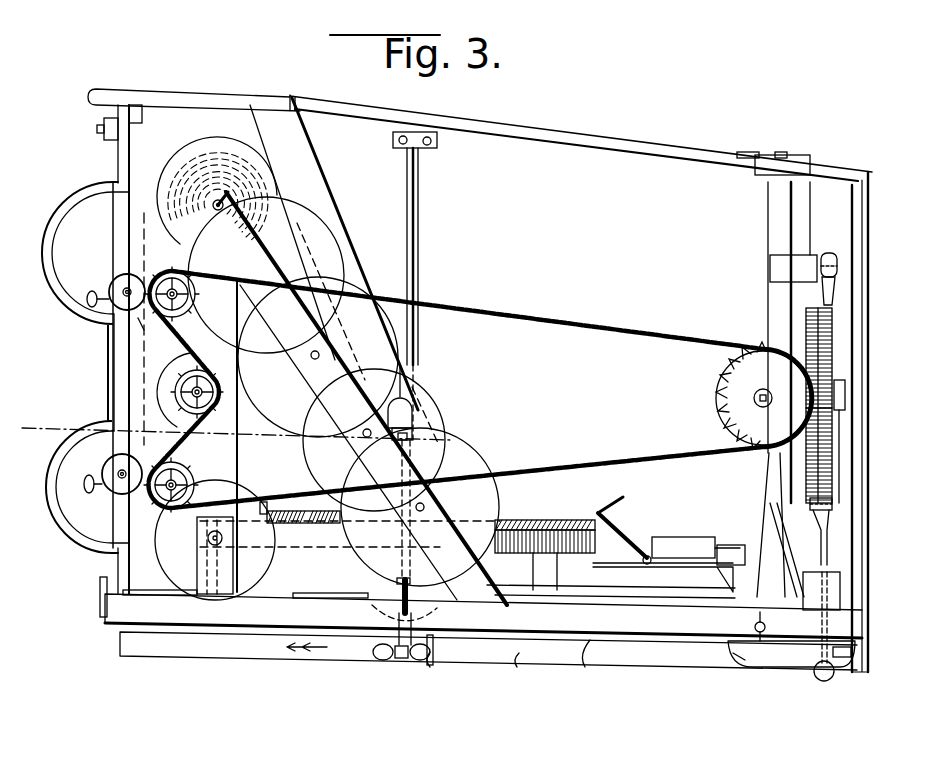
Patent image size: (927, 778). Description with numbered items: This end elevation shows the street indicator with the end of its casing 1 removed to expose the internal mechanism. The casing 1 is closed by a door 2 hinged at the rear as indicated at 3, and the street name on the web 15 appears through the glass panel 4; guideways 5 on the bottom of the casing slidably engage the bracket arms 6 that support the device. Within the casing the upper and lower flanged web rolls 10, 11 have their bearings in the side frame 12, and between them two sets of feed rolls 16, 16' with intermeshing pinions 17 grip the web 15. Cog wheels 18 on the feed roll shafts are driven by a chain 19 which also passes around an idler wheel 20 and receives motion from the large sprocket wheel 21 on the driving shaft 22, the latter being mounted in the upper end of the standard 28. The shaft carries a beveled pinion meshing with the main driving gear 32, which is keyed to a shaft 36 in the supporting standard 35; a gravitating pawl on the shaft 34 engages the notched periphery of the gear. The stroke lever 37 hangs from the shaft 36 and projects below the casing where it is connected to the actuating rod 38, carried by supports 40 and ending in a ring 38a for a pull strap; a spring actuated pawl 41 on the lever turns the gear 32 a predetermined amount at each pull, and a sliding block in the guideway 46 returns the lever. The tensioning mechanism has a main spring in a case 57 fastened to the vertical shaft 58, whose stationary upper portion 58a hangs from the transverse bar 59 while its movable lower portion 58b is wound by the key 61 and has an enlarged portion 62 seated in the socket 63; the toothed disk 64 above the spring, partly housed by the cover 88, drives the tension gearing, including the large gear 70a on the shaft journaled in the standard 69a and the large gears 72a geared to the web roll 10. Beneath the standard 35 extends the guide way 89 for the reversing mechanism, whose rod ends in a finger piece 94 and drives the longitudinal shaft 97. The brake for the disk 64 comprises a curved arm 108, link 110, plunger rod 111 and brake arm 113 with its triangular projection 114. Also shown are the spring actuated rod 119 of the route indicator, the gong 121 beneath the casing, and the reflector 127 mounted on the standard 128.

The casing 1 is at (197, 617).
The door 2 is at (622, 143).
The hinge 3 is at (757, 157).
The glass panel 4 is at (113, 366).
The guideways 5 is at (303, 554).
The bracket arms 6 is at (515, 671).
The upper web roll 10 is at (197, 190).
The lower web roll 11 is at (160, 543).
The side frame 12 is at (252, 244).
The web 15 is at (117, 386).
The feed roll 16 is at (160, 396).
The feed roll 16' is at (102, 407).
The pinions 17 is at (141, 332).
The cog wheels 18 is at (196, 293).
The driving chain 19 is at (500, 313).
The idler wheel 20 is at (199, 378).
The sprocket wheel 21 is at (763, 395).
The driving shaft 22 is at (769, 406).
The standard 28 is at (764, 465).
The main driving gear 32 is at (834, 308).
The shaft 34 is at (839, 266).
The supporting standard 35 is at (770, 280).
The shaft 36 is at (845, 392).
The stroke lever 37 is at (836, 482).
The actuating rod 38 is at (832, 295).
The ring 38a is at (833, 677).
The supports 40 is at (791, 654).
The spring actuated pawl 41 is at (810, 506).
The guideway 46 is at (840, 600).
The case 57 is at (525, 553).
The vertical shaft 58 is at (400, 537).
The upper shaft portion 58a is at (420, 242).
The lower shaft portion 58b is at (377, 583).
The transverse bar 59 is at (438, 147).
The manipulating key 61 is at (385, 660).
The enlarged portion 62 is at (420, 613).
The socket 63 is at (347, 616).
The tension gear 64 is at (547, 520).
The standard 69a is at (388, 650).
The large gear 70a is at (472, 458).
The large gears 72a is at (327, 237).
The cover 88 is at (258, 578).
The guide way 89 is at (785, 558).
The finger piece 94 is at (755, 628).
The longitudinal shaft 97 is at (570, 592).
The curved arm 108 is at (745, 540).
The link 110 is at (720, 537).
The plunger rod 111 is at (645, 560).
The brake arm 113 is at (620, 518).
The triangular projection 114 is at (600, 503).
The spring actuated rod 119 is at (300, 600).
The gong 121 is at (736, 645).
The reflector 127 is at (318, 165).
The standard 128 is at (437, 497).